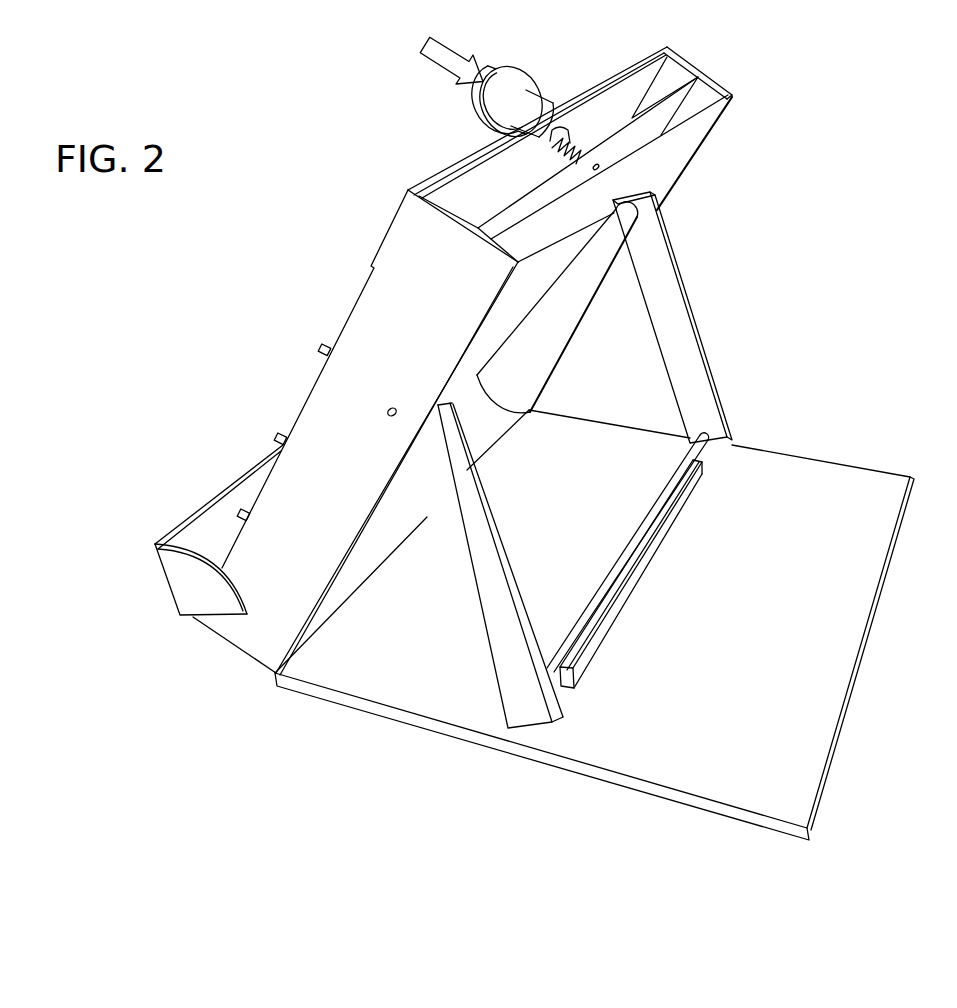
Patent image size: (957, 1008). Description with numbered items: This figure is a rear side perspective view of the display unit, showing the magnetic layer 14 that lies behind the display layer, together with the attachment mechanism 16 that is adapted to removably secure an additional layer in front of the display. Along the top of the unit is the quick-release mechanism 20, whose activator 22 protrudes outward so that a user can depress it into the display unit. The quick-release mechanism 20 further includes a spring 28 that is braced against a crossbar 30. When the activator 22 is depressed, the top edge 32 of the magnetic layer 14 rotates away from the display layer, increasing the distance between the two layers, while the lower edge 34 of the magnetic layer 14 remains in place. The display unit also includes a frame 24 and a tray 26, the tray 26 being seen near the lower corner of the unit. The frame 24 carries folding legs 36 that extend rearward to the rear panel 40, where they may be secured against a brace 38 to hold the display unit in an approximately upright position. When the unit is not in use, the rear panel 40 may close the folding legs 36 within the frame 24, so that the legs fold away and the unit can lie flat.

The magnetic layer 14 is at (633, 87).
The attachment mechanism 16 is at (323, 352).
The quick-release mechanism 20 is at (562, 92).
The activator 22 is at (475, 115).
The frame 24 is at (267, 637).
The tray 26 is at (207, 533).
The spring 28 is at (557, 150).
The crossbar 30 is at (643, 133).
The top edge 32 is at (607, 100).
The lower edge 34 is at (530, 413).
The folding legs 36 is at (673, 333).
The brace 38 is at (630, 573).
The rear panel 40 is at (397, 678).